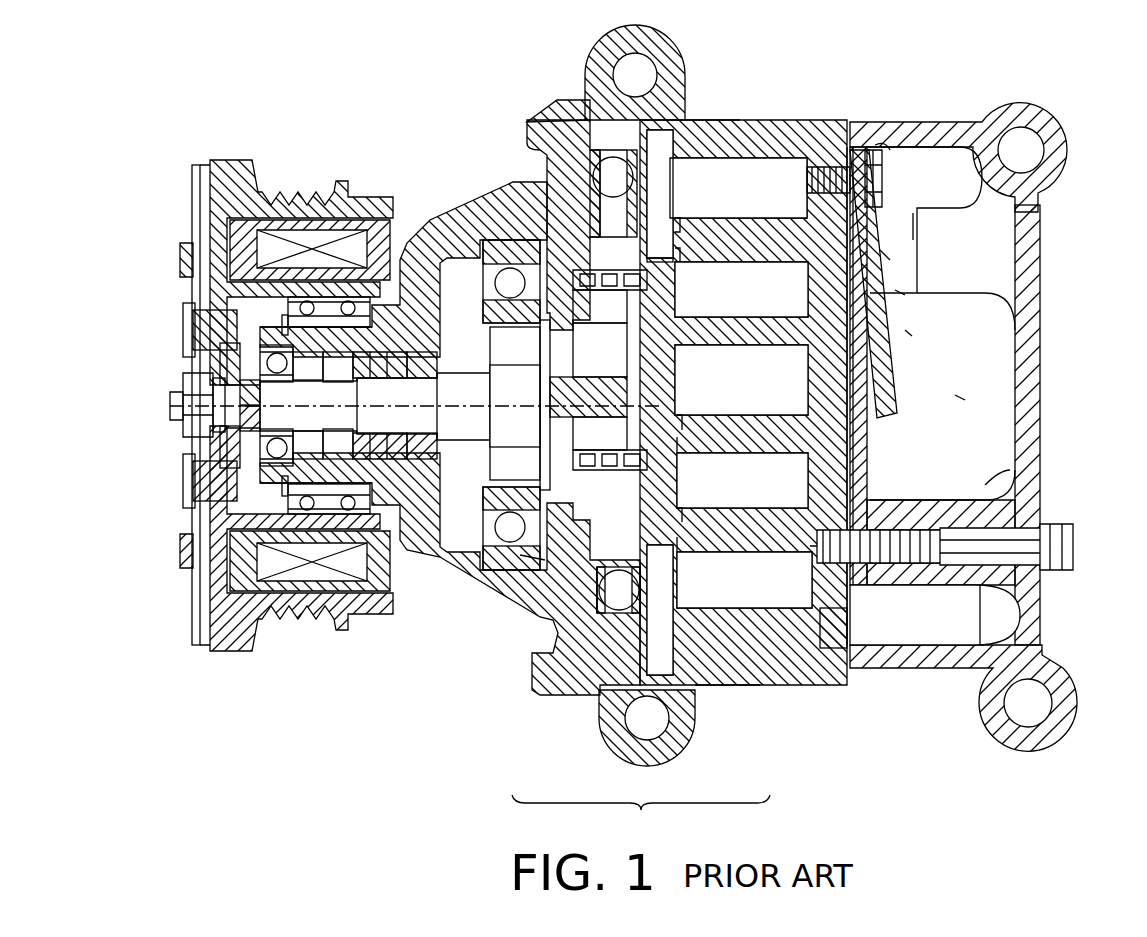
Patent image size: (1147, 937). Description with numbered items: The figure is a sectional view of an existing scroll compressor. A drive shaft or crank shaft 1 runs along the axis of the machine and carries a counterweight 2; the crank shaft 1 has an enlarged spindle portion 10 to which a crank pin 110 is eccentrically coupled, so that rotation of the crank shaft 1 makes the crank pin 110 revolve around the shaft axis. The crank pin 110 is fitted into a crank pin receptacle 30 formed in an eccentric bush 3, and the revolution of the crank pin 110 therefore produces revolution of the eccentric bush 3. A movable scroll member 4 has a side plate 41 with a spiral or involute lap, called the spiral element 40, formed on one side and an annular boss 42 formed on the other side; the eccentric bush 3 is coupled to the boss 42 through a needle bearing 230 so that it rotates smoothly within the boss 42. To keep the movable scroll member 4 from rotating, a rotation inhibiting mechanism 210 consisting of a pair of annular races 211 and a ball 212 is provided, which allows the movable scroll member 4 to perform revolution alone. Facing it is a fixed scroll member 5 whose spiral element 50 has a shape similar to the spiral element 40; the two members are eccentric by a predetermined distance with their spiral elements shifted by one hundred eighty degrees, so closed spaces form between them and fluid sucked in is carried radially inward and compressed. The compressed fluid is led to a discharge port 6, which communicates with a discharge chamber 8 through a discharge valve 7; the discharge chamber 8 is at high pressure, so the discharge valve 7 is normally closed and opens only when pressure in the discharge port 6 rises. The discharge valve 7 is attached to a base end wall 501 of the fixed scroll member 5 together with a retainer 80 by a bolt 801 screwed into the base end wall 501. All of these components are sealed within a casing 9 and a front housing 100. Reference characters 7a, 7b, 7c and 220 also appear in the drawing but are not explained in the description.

The crank shaft 1 is at (283, 403).
The counterweight 2 is at (567, 555).
The eccentric bush 3 is at (750, 240).
The movable scroll member 4 is at (640, 250).
The fixed scroll member 5 is at (845, 628).
The discharge port 6 is at (960, 400).
The discharge valve 7 is at (860, 403).
The piston head 7a is at (878, 145).
The piston shoe 7b is at (910, 340).
The piston neck 7c is at (895, 262).
The discharge chamber 8 is at (1012, 495).
The casing 9 is at (810, 645).
The enlarged spindle portion 10 is at (497, 353).
The crank pin receptacle 30 is at (592, 245).
The spiral element 40 is at (782, 252).
The side plate 41 is at (760, 635).
The annular boss 42 is at (530, 560).
The spiral element 50 is at (880, 160).
The retainer 80 is at (900, 300).
The front housing 100 is at (460, 580).
The crank pin 110 is at (555, 330).
The rotation inhibiting mechanism 210 is at (641, 816).
The annular races 211 is at (655, 625).
The ball 212 is at (608, 605).
The clutch bearing 220 is at (507, 270).
The needle bearing 230 is at (673, 253).
The base end wall 501 is at (985, 485).
The bolt 801 is at (885, 178).